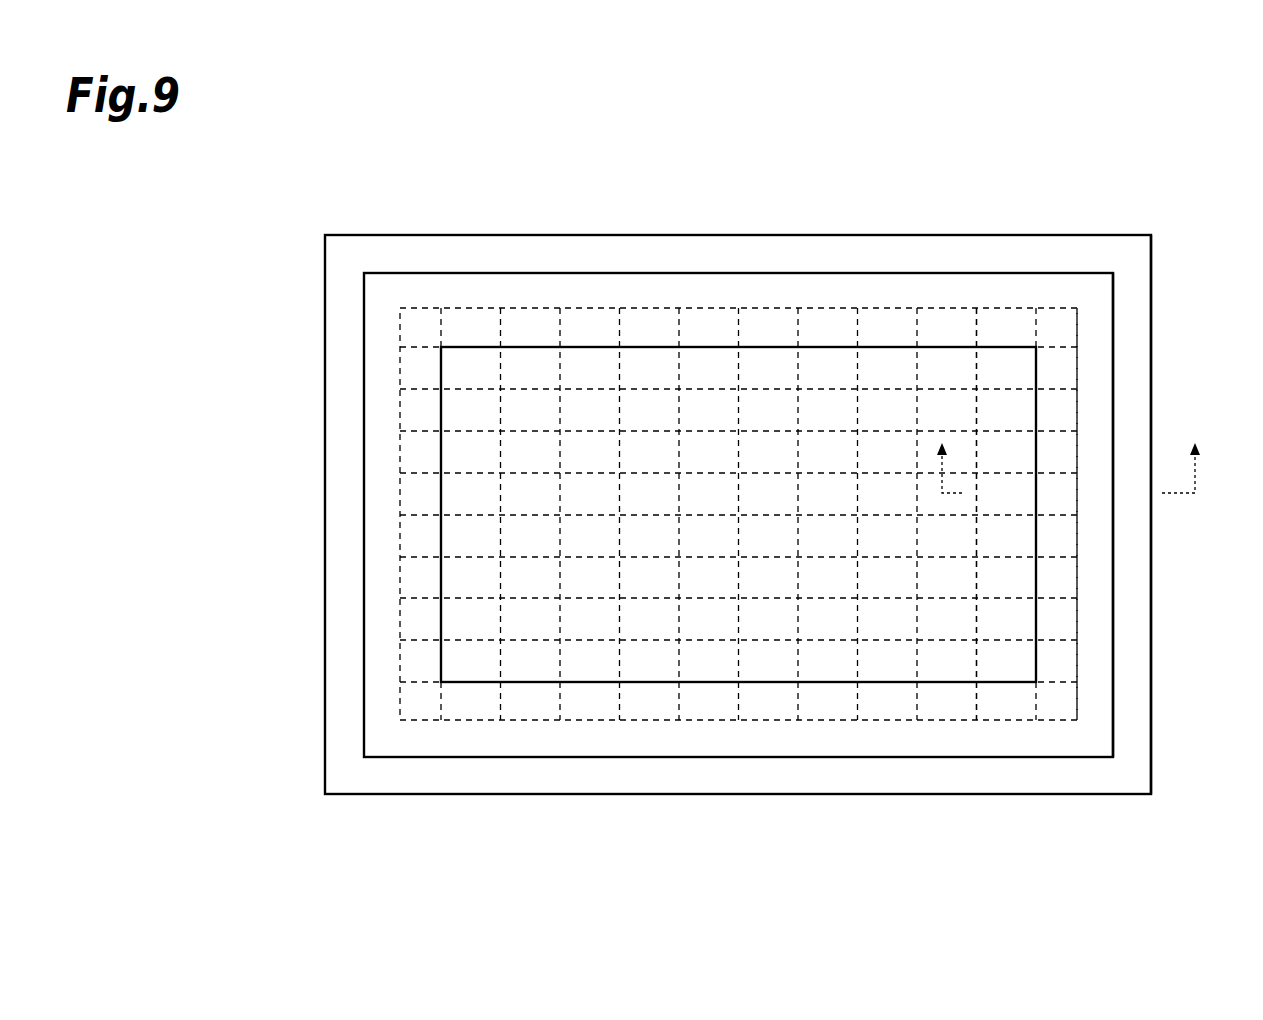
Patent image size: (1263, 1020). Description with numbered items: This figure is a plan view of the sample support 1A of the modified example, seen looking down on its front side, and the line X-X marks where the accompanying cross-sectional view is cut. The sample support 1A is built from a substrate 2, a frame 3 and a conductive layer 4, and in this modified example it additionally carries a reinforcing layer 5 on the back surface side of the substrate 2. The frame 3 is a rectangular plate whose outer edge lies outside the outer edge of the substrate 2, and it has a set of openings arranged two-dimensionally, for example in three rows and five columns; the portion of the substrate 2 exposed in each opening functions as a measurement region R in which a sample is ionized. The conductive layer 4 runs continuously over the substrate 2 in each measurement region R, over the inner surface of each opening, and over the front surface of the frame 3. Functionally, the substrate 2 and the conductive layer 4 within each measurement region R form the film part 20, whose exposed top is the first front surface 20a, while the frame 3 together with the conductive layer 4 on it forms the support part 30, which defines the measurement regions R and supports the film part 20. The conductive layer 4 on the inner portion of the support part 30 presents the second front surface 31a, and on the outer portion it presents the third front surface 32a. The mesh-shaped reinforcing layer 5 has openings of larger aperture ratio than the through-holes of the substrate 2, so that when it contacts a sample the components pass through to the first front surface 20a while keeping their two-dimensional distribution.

The sample support 1A is at (989, 228).
The substrate 2 is at (400, 455).
The frame 3 is at (325, 580).
The conductive layer 4 is at (763, 665).
The reinforcing layer 5 is at (942, 640).
The film part 20 is at (650, 670).
The first front surface 20a is at (884, 365).
The measurement region R is at (720, 497).
The support part 30 is at (1152, 640).
The second front surface 31a is at (1055, 583).
The third front surface 32a is at (1140, 393).
The line X- X is at (1067, 456).